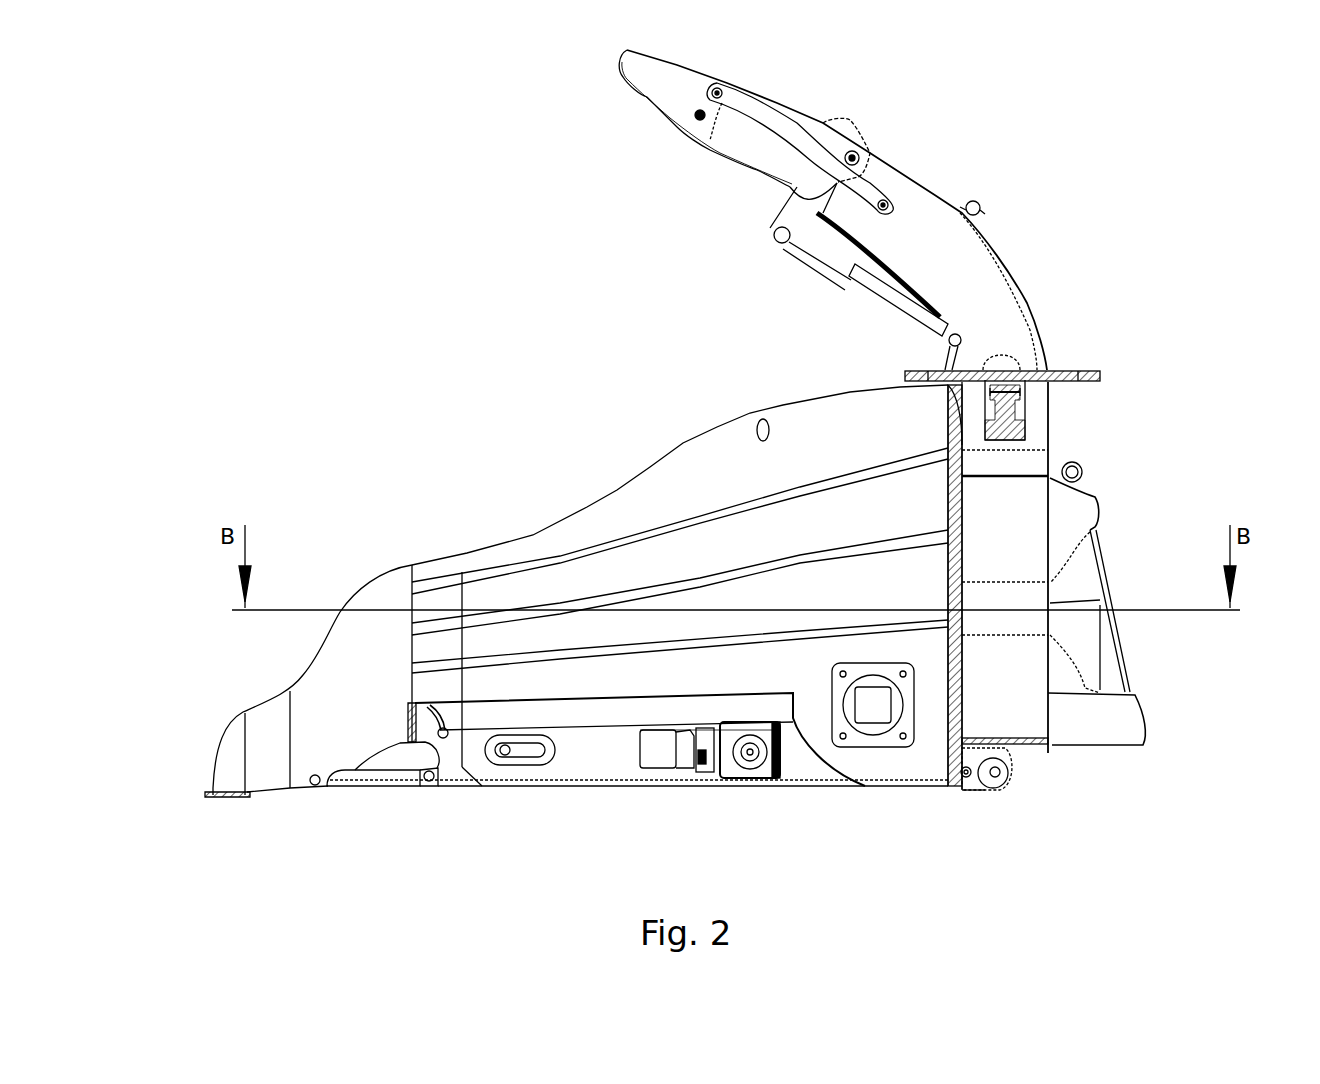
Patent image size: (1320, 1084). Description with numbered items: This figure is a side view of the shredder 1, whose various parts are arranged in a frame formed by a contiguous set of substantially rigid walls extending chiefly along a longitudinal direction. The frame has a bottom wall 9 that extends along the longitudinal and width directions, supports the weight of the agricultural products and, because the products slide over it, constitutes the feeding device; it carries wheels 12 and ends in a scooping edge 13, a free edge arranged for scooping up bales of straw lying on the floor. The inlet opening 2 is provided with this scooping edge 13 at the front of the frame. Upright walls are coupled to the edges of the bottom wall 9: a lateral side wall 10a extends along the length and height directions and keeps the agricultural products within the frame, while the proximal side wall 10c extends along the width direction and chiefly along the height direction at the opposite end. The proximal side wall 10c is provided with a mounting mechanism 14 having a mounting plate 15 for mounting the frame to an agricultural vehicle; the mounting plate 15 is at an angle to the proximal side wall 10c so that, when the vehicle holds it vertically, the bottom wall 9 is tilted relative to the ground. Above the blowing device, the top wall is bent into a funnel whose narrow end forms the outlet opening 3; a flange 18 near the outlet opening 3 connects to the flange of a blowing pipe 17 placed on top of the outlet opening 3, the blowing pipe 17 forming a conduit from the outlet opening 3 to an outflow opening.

The shredder 1 is at (356, 313).
The inlet opening 2 is at (228, 656).
The outlet opening 3 is at (1033, 428).
The bottom wall 9 is at (800, 790).
The lateral side wall 10a is at (605, 678).
The proximal side wall 10c is at (1048, 695).
The wheels 12 is at (1010, 788).
The scooping edge 13 is at (222, 790).
The mounting mechanism 14 is at (1178, 722).
The mounting plate 15 is at (1120, 668).
The blowing pipe 17 is at (983, 268).
The flange 18 is at (1090, 375).